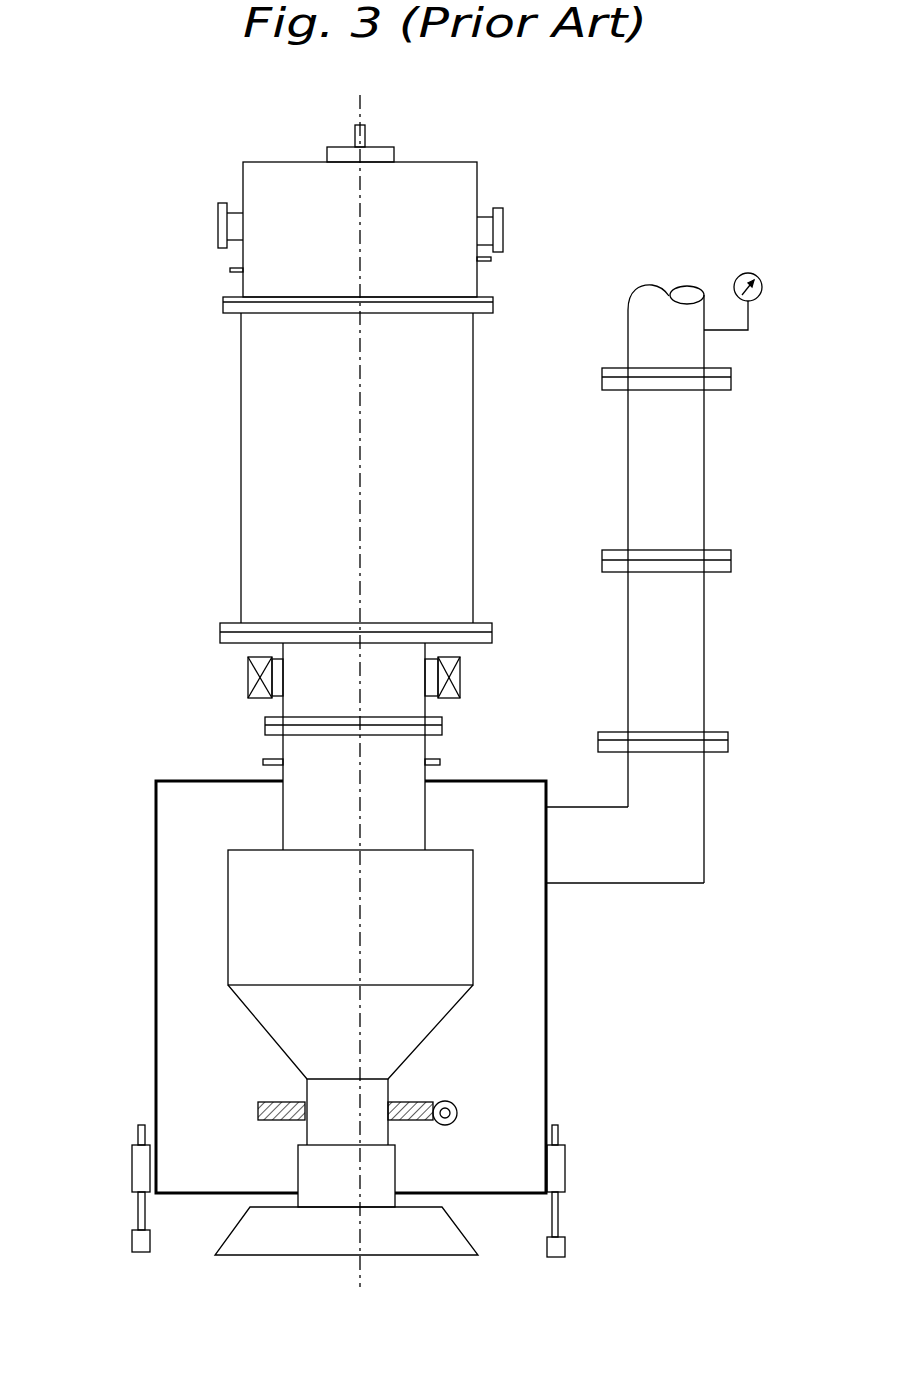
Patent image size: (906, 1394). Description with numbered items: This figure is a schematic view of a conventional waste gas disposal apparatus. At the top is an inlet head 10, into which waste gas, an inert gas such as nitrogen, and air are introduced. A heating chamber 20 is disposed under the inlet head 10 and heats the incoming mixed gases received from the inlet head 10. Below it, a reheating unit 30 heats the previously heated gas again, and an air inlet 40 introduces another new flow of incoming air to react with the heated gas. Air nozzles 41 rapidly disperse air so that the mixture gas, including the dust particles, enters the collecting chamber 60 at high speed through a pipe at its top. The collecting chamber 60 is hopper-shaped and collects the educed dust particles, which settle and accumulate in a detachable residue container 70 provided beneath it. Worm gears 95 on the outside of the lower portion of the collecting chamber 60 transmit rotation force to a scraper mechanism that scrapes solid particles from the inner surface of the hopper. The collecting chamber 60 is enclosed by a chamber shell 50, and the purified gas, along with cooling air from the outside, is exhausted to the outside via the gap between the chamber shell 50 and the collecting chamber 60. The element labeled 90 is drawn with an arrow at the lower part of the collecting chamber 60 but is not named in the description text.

The inlet head 10 is at (467, 190).
The heating chamber 20 is at (455, 350).
The reheating unit 30 is at (460, 680).
The air inlet 40 is at (290, 743).
The air nozzles 41 is at (265, 762).
The chamber shell 50 is at (152, 997).
The collecting chamber 60 is at (448, 948).
The residue container 70 is at (300, 1240).
The valve assembly 90 is at (445, 1084).
The worm gears 95 is at (277, 1120).